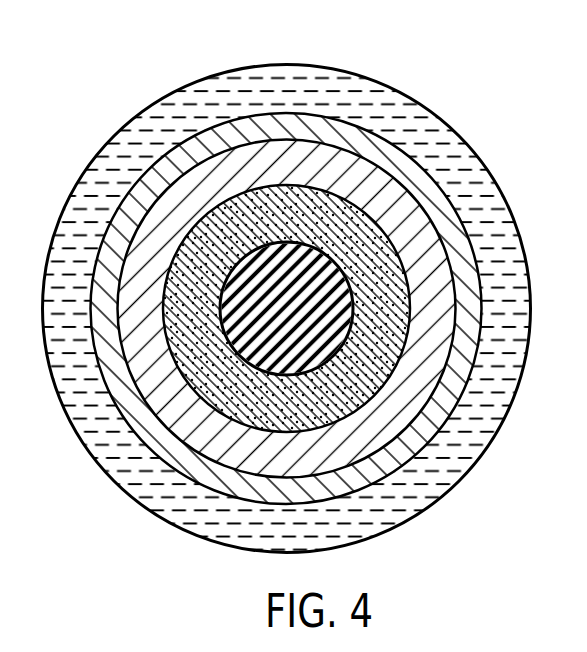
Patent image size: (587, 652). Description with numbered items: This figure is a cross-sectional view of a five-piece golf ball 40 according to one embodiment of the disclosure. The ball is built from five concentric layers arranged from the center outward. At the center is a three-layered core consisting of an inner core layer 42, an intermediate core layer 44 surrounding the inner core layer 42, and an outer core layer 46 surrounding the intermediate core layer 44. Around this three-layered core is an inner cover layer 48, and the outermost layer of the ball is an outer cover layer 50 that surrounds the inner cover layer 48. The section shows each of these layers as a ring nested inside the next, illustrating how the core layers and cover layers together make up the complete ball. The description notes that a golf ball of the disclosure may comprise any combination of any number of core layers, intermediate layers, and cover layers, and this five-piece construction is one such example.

The five-piece golf ball 40 is at (310, 289).
The inner core layer 42 is at (330, 277).
The intermediate core layer 44 is at (380, 300).
The outer core layer 46 is at (435, 327).
The inner cover layer 48 is at (455, 395).
The outer cover layer 50 is at (475, 435).